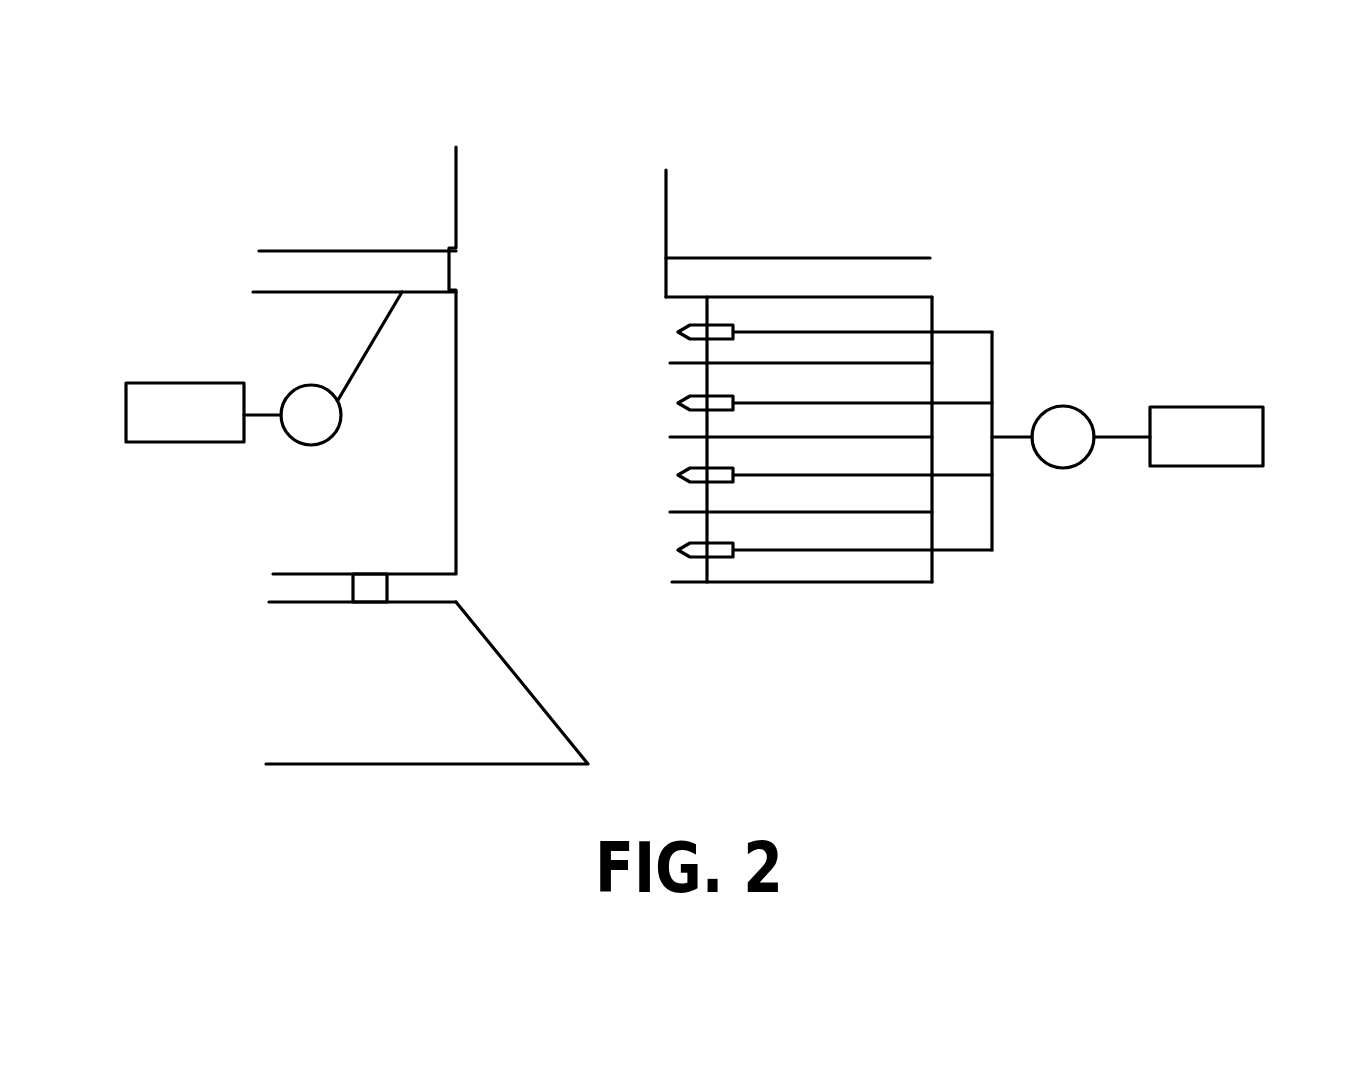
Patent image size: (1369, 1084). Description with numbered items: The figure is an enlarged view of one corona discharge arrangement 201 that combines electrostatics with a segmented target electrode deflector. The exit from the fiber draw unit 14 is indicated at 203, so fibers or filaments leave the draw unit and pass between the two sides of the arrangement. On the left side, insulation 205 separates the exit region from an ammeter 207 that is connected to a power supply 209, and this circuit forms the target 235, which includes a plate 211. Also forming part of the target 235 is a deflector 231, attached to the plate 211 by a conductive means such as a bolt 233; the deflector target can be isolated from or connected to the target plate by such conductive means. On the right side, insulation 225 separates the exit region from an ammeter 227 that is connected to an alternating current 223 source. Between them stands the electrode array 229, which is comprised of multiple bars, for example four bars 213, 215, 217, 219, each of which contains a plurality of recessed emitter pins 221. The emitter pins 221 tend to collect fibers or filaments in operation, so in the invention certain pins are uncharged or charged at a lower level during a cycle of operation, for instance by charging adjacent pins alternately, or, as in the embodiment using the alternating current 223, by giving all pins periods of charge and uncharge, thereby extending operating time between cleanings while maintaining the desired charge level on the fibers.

The fiber draw unit 14 is at (668, 193).
The corona discharge arrangement 201 is at (1075, 157).
The exit from fiber draw unit 203 is at (605, 215).
The insulation 205 is at (358, 272).
The ammeter 207 is at (300, 447).
The power supply 209 is at (170, 405).
The plate 211 is at (453, 380).
The bar 213 is at (677, 333).
The bar 215 is at (677, 405).
The bar 217 is at (683, 482).
The bar 219 is at (683, 557).
The recessed emitter pins 221 is at (740, 400).
The alternating current 223 is at (1230, 418).
The insulation 225 is at (900, 281).
The ammeter 227 is at (1062, 407).
The electrode array 229 is at (937, 567).
The deflector 231 is at (465, 717).
The bolt 233 is at (352, 583).
The target 235 is at (407, 543).